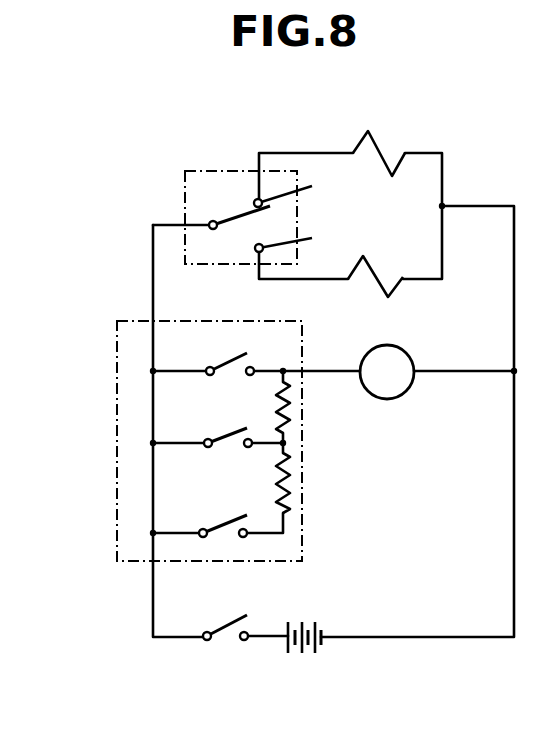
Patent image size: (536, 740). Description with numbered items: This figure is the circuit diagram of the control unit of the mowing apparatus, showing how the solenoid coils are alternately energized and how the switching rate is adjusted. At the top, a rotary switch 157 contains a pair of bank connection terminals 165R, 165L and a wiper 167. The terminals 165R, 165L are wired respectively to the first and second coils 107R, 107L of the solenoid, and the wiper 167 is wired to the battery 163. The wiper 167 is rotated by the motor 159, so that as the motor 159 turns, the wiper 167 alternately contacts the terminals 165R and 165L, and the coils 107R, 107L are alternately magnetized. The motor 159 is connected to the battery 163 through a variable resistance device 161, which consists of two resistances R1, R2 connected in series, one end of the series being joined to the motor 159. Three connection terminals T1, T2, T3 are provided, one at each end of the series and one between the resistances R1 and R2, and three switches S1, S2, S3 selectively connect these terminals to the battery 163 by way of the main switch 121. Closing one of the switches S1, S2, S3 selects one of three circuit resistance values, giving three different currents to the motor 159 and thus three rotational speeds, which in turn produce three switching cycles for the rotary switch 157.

The rotary switch 157 is at (180, 185).
The wiper 167 is at (233, 220).
The bank connection terminal 165R is at (315, 190).
The bank connection terminal 165L is at (313, 234).
The first coil 107R is at (375, 148).
The second coil 107L is at (375, 272).
The variable resistance device 161 is at (117, 503).
The switch S1 is at (242, 353).
The switch S2 is at (242, 428).
The switch S3 is at (242, 515).
The connection terminal T1 is at (266, 354).
The connection terminal T2 is at (248, 447).
The connection terminal T3 is at (245, 540).
The resistance R1 is at (282, 407).
The resistance R2 is at (282, 483).
The motor 159 is at (398, 388).
The main switch 121 is at (229, 627).
The battery 163 is at (317, 645).